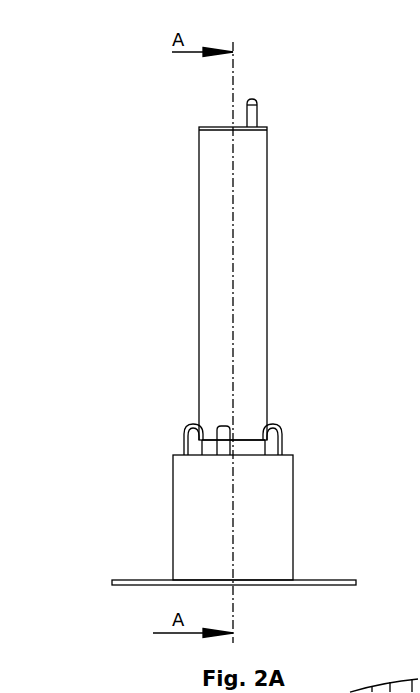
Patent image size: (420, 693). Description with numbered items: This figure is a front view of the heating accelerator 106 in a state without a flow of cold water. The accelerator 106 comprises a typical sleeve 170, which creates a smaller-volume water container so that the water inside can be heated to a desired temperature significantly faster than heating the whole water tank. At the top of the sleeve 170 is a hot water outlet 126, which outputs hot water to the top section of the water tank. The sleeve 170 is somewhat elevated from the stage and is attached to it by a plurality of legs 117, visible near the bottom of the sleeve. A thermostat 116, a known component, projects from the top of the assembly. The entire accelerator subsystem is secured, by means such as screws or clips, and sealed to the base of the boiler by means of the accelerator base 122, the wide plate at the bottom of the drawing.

The heating accelerator 106 is at (284, 279).
The thermostat 116 is at (255, 110).
The legs 117 is at (187, 440).
The accelerator base 122 is at (115, 580).
The hot water outlet 126 is at (220, 127).
The sleeve 170 is at (198, 278).